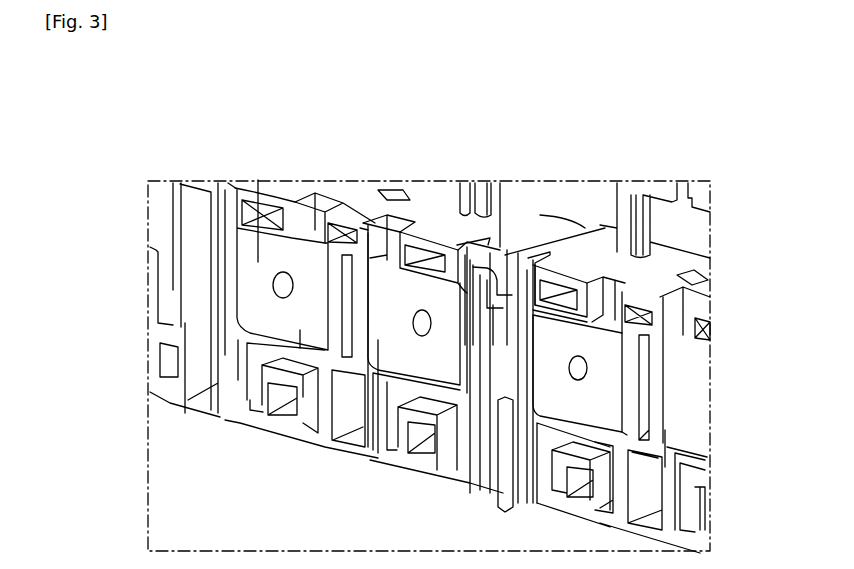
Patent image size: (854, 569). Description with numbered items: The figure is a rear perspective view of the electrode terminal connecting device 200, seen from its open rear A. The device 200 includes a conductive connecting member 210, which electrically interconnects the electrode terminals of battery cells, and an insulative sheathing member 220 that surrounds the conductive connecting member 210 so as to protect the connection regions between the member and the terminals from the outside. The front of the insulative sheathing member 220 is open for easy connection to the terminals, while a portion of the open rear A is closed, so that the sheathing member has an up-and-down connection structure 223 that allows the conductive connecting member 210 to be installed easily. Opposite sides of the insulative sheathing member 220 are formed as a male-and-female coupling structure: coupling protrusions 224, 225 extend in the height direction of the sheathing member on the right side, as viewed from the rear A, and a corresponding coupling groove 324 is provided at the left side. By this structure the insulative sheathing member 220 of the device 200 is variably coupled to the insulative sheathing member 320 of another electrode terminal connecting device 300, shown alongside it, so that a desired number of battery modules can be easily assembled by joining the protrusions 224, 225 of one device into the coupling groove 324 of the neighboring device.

The electrode terminal connecting device 200 is at (352, 160).
The conductive connecting member 210 is at (237, 188).
The insulative sheathing member 220 is at (436, 230).
The up-and-down connection structure 223 is at (358, 343).
The coupling protrusion 224 is at (502, 185).
The coupling protrusion 225 is at (510, 506).
The another electrode terminal connecting device 300 is at (690, 165).
The insulative sheathing member 320 is at (613, 210).
The coupling groove 324 is at (497, 350).
The open rear A is at (138, 303).